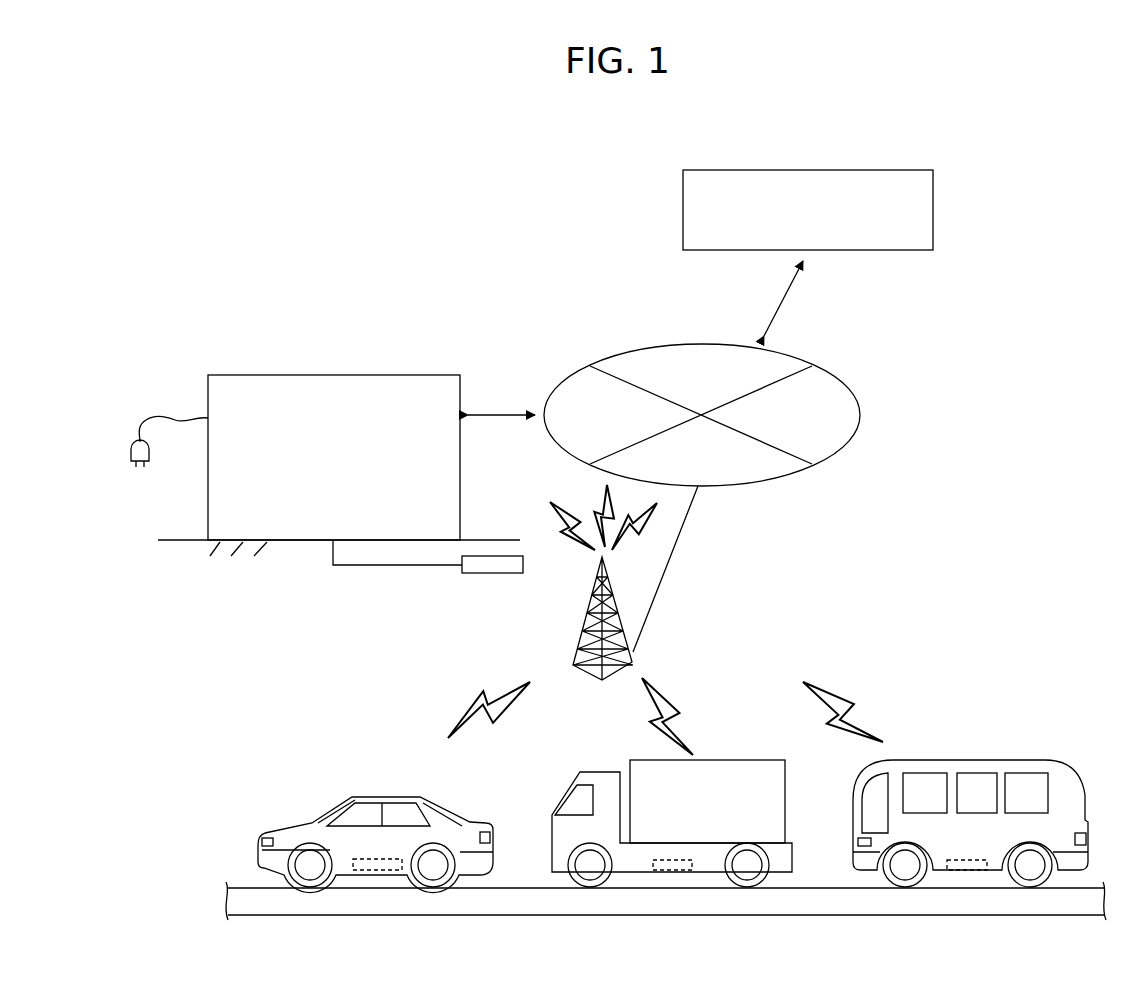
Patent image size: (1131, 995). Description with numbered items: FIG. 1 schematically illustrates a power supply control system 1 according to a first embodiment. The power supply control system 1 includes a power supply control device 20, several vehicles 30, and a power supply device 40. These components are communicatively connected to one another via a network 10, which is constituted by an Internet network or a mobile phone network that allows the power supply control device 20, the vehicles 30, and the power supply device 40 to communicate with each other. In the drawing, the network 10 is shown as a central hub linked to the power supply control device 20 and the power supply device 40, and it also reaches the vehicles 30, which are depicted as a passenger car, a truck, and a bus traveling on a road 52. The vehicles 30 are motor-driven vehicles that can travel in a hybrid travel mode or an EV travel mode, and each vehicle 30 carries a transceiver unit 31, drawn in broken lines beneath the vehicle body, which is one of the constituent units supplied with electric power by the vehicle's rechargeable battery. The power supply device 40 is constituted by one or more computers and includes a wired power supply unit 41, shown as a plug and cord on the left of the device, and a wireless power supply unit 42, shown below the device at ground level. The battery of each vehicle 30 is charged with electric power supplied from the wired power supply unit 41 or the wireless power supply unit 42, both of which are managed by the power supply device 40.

The power supply control system 1 is at (616, 164).
The network 10 is at (694, 344).
The power supply control device 20 is at (895, 170).
The vehicle 30 is at (448, 807).
The transceiver unit 31 is at (402, 866).
The power supply device 40 is at (417, 375).
The wired power supply unit 41 is at (157, 414).
The wireless power supply unit 42 is at (488, 574).
The road 52 is at (1063, 906).